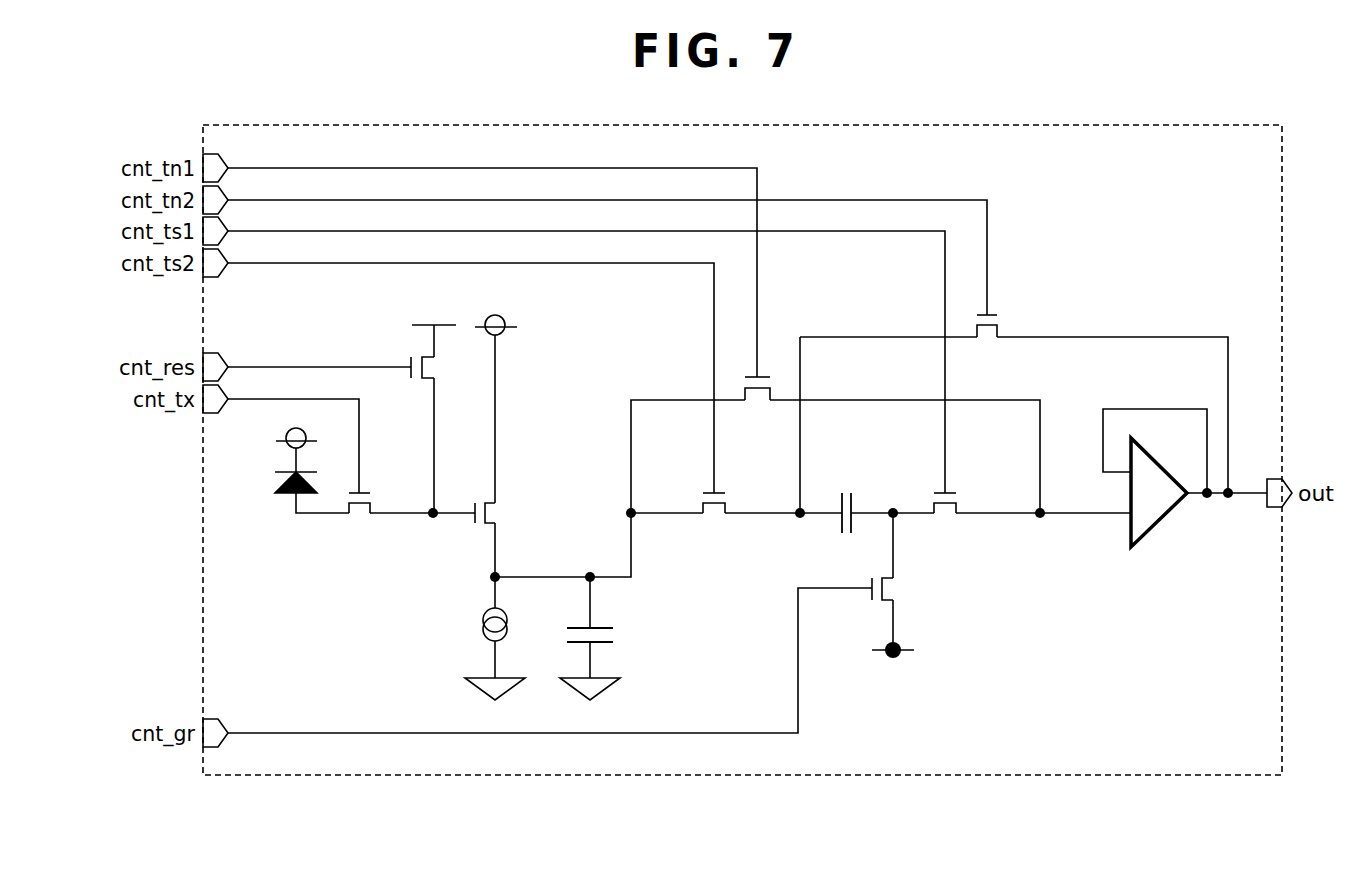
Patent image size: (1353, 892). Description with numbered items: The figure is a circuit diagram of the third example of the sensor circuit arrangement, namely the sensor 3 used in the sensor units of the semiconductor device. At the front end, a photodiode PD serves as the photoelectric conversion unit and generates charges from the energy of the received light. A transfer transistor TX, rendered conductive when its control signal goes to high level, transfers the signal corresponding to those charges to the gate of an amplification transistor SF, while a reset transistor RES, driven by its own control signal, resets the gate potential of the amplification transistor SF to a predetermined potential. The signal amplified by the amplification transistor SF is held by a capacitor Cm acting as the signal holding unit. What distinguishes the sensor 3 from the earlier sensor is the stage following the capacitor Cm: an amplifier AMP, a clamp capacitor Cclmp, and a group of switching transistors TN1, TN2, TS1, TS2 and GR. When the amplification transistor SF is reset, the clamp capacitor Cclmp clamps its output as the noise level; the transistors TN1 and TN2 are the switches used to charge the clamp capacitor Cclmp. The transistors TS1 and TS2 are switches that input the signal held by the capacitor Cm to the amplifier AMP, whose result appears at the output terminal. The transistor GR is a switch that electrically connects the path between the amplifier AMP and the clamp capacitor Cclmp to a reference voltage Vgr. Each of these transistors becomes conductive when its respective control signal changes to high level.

The sensor 3 is at (200, 652).
The photodiode PD is at (275, 480).
The transfer transistor TX is at (360, 516).
The reset transistor RES is at (410, 351).
The amplification transistor SF is at (500, 514).
The capacitor Cm is at (615, 640).
The transistor TS2 is at (706, 488).
The transistor TN1 is at (758, 406).
The clamp capacitor Cclmp is at (849, 488).
The transistor TS1 is at (955, 484).
The transistor TN2 is at (998, 311).
The transistor GR is at (897, 588).
The reference voltage Vgr is at (893, 667).
The amplifier AMP is at (1127, 550).